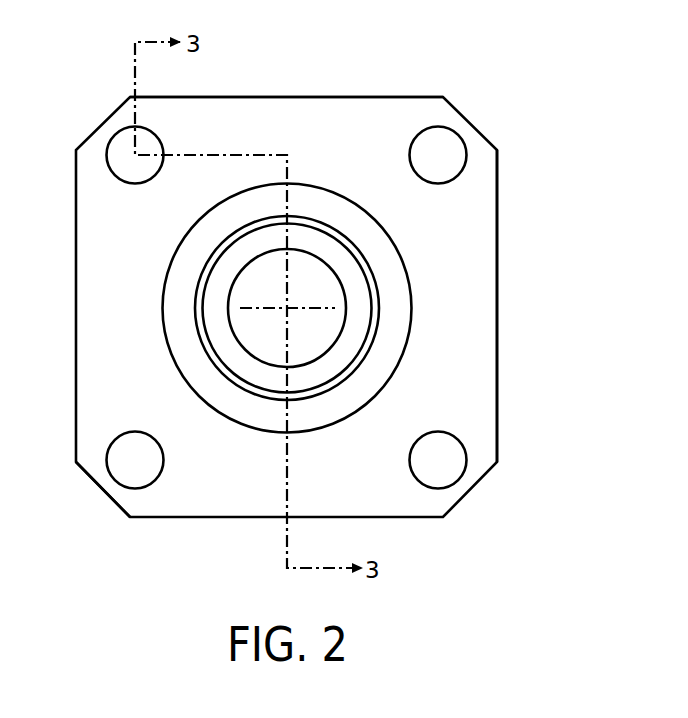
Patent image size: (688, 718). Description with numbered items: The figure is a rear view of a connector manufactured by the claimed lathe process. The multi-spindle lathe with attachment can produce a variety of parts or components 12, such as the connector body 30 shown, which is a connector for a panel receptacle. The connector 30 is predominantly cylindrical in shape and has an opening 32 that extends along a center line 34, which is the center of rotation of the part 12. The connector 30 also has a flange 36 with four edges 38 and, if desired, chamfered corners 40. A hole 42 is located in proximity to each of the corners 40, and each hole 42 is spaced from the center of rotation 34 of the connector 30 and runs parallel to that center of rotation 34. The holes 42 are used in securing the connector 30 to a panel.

The part 12 is at (506, 108).
The connector body 30 is at (300, 101).
The opening 32 is at (310, 347).
The center line 34 is at (287, 312).
The flange 36 is at (478, 285).
The edges 38 is at (497, 422).
The chamfered corners 40 is at (107, 498).
The hole 42 is at (420, 462).